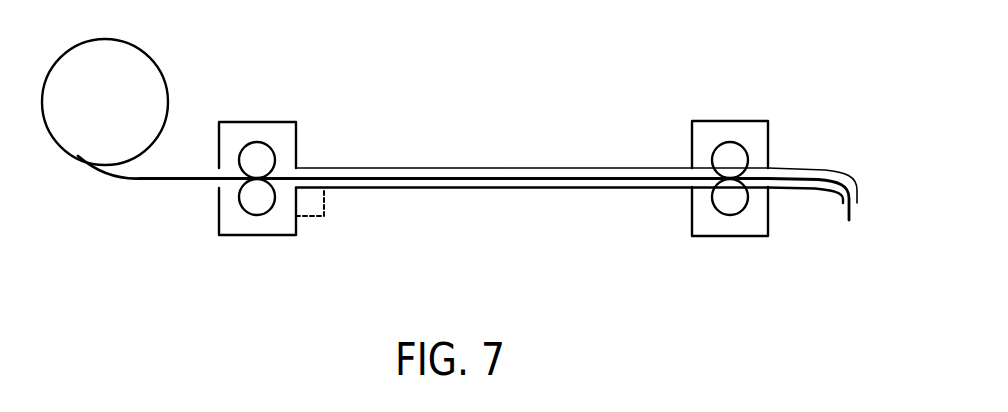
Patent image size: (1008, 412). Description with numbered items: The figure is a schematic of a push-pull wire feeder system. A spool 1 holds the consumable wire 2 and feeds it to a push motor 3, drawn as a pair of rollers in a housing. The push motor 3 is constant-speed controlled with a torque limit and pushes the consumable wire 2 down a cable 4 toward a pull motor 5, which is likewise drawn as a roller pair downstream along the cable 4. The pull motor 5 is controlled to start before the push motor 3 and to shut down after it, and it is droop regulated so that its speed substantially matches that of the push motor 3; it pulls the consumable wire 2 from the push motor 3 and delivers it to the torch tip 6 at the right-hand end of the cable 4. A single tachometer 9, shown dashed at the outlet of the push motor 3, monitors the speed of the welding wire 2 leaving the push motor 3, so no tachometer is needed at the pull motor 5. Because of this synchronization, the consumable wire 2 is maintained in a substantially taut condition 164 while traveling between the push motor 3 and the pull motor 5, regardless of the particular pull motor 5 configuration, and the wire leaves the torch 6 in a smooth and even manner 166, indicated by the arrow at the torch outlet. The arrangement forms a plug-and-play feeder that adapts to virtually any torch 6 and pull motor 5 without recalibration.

The spool 1 is at (106, 40).
The consumable wire 2 is at (176, 182).
The push motor 3 is at (263, 86).
The cable 4 is at (420, 168).
The substantially taut condition 164 is at (537, 177).
The tachometer 9 is at (302, 218).
The pull motor 5 is at (737, 86).
The torch tip 6 is at (843, 170).
The smooth and even manner 166 is at (851, 250).